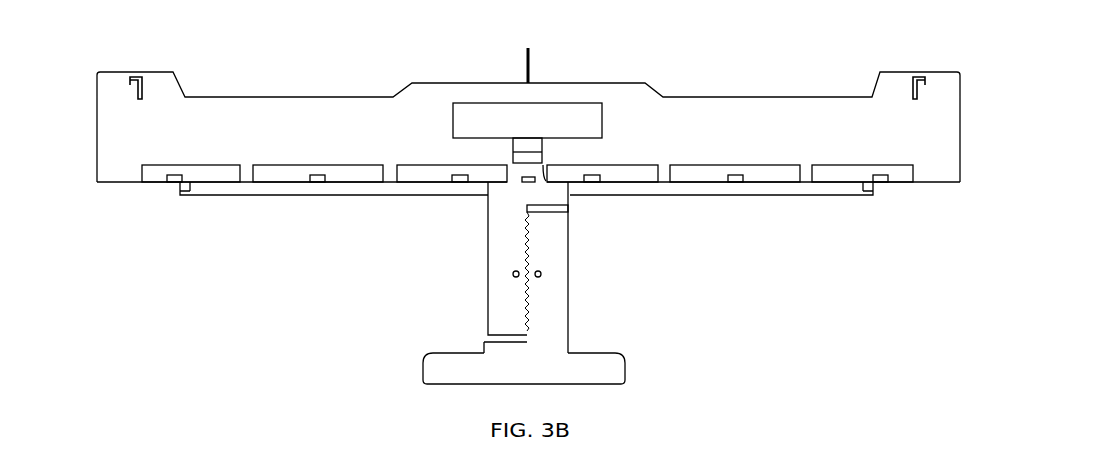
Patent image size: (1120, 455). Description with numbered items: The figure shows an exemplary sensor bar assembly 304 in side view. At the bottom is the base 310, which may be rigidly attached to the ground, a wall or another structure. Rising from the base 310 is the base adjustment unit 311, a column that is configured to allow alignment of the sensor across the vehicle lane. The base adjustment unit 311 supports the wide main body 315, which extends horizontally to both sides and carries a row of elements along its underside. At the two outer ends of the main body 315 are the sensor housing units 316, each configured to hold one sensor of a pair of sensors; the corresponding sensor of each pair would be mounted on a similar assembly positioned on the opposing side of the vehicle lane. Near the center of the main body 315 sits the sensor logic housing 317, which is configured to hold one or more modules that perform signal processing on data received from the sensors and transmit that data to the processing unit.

The sensor bar assembly 304 is at (548, 30).
The base 310 is at (629, 372).
The base adjustment unit 311 is at (571, 259).
The main body 315 is at (284, 155).
The sensor housing units 316 is at (111, 183).
The sensor logic housing 317 is at (606, 107).